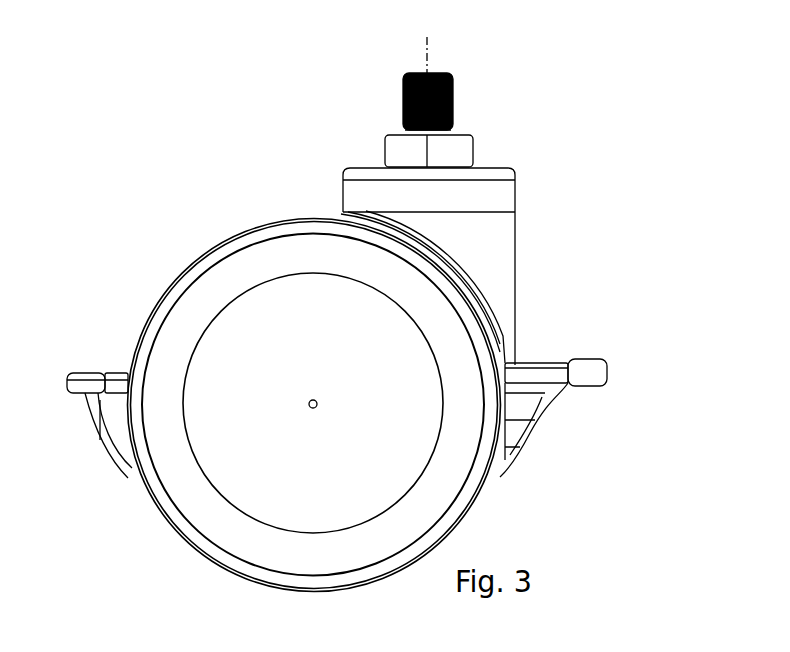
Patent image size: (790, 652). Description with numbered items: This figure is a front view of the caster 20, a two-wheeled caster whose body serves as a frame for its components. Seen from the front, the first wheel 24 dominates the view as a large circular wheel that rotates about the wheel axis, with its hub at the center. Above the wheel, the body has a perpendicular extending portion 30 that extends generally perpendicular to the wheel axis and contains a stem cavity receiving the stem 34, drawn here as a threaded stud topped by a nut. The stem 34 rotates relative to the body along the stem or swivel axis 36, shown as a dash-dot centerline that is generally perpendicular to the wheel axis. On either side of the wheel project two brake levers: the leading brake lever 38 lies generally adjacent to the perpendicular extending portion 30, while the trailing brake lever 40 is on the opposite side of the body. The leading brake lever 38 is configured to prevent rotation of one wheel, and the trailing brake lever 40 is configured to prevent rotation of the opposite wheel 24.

The caster 20 is at (139, 152).
The first wheel 24 is at (214, 558).
The perpendicular extending portion 30 is at (503, 252).
The stem 34 is at (403, 103).
The swivel axis 36 is at (425, 42).
The leading brake lever 38 is at (608, 368).
The trailing brake lever 40 is at (67, 376).